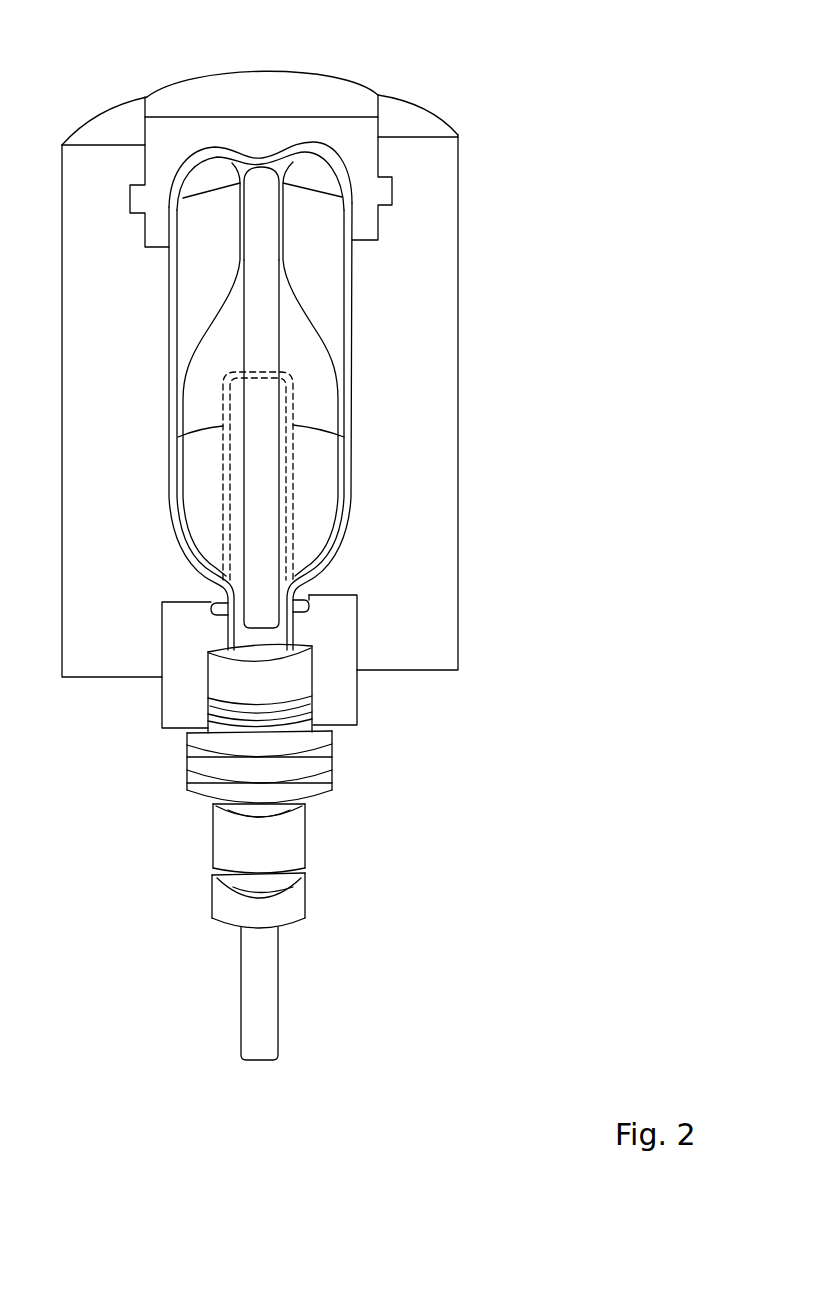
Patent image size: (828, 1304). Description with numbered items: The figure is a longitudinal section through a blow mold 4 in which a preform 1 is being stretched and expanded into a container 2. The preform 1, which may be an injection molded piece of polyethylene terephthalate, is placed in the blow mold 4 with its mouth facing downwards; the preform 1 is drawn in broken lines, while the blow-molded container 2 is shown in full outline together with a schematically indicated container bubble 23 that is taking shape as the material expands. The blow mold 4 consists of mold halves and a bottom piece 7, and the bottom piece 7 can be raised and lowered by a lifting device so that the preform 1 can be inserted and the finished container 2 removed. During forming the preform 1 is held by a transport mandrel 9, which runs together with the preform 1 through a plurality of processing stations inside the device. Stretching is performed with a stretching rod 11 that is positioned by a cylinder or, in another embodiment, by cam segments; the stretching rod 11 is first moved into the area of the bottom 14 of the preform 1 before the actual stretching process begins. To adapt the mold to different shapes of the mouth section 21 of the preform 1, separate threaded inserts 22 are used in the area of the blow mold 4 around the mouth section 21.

The preform 1 is at (293, 507).
The container 2 is at (352, 322).
The blow mold 4 is at (423, 378).
The bottom piece 7 is at (330, 85).
The transport mandrel 9 is at (322, 783).
The stretching rod 11 is at (240, 1007).
The bottom 14 is at (288, 372).
The mouth section 21 is at (358, 622).
The threaded inserts 22 is at (343, 693).
The container bubble 23 is at (303, 292).